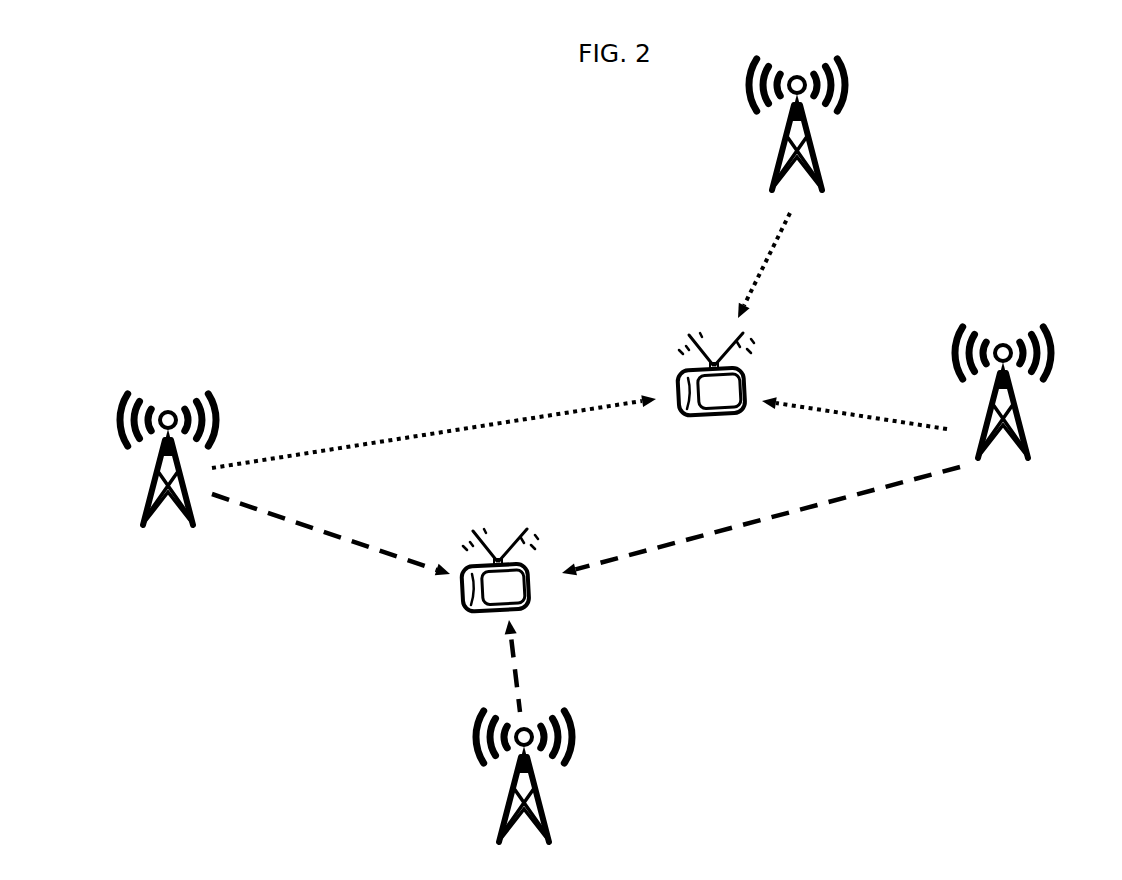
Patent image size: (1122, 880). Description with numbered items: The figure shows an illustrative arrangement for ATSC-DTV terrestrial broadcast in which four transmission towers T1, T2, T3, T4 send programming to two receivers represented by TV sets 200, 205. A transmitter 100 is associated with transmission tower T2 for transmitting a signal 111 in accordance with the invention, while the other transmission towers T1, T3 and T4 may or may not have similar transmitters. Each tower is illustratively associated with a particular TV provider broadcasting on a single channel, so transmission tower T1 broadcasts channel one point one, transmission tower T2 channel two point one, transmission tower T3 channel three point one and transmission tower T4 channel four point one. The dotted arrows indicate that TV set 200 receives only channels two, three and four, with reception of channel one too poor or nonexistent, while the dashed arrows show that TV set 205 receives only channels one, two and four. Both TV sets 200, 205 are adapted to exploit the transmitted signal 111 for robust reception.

The transmitter 100 is at (130, 465).
The signal 111 is at (312, 462).
The TV set 200 is at (665, 338).
The TV set 205 is at (448, 612).
The transmission tower T1 is at (567, 826).
The transmission tower T2 is at (146, 493).
The transmission tower T3 is at (827, 163).
The transmission tower T4 is at (1035, 465).